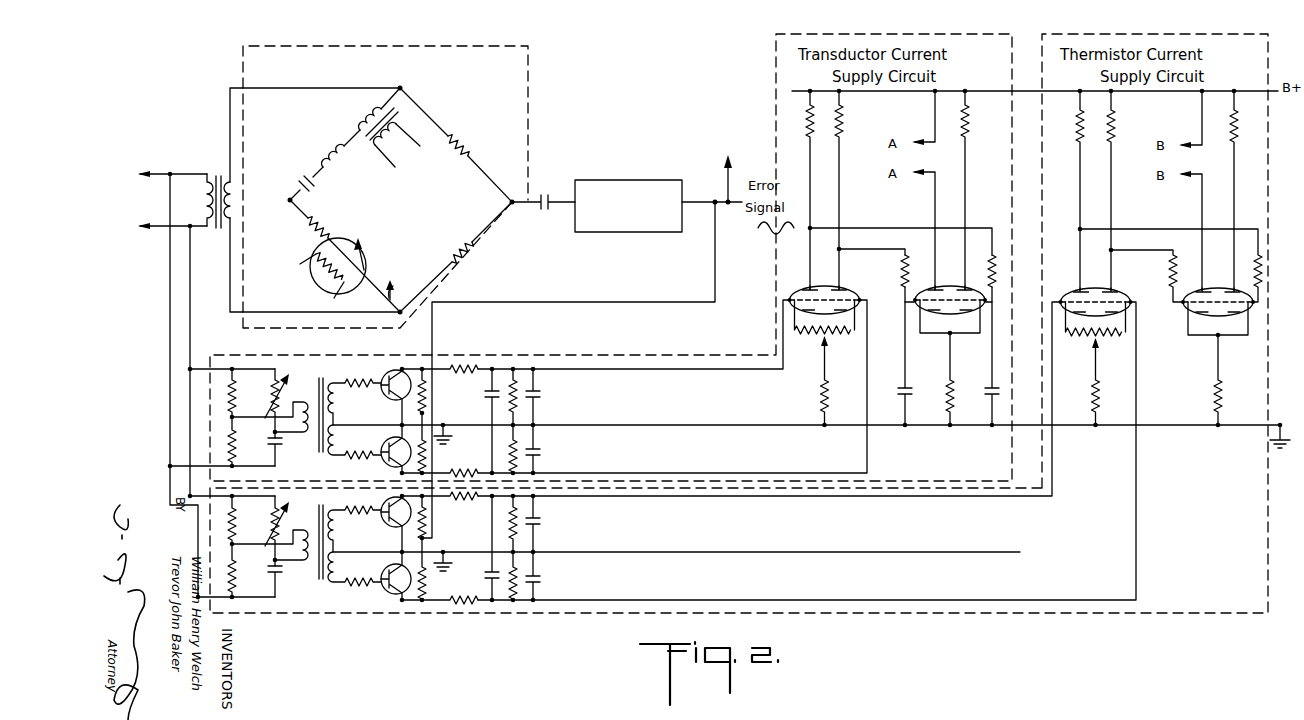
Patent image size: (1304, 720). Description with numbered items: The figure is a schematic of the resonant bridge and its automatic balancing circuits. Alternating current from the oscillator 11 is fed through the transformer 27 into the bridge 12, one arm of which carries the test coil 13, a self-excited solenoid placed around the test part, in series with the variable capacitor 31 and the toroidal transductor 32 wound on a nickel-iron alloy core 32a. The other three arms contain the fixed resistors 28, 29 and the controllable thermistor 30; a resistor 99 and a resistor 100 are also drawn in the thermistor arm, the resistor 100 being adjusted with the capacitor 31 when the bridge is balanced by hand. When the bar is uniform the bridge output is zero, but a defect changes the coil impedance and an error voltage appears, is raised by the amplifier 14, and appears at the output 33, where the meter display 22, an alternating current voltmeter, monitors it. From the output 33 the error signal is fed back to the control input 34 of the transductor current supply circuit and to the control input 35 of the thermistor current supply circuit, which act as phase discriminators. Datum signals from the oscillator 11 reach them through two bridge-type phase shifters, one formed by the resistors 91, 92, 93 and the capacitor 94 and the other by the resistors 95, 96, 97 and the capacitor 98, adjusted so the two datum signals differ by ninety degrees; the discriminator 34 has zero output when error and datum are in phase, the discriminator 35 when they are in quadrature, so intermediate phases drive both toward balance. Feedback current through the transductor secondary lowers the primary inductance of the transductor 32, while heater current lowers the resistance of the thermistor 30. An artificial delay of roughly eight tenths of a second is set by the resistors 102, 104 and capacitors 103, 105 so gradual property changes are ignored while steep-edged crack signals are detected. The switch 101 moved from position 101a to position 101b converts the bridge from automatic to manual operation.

The oscillator 11 is at (147, 178).
The bridge 12 is at (385, 187).
The test coil 13 is at (322, 144).
The amplifier 14 is at (628, 206).
The meter display 22 is at (706, 160).
The transformer 27 is at (226, 232).
The fixed resistor 28 is at (470, 150).
The fixed resistor 29 is at (462, 252).
The thermistor 30 is at (310, 276).
The variable capacitor 31 is at (300, 178).
The toroidal transductor 32 is at (370, 136).
The core 32a is at (406, 114).
The output 33 is at (715, 192).
The control input 34 is at (424, 412).
The control input 35 is at (440, 548).
The resistor 91 is at (252, 388).
The resistor 92 is at (252, 442).
The resistor 93 is at (282, 388).
The capacitor 94 is at (282, 444).
The resistor 95 is at (252, 516).
The resistor 96 is at (252, 570).
The resistor 97 is at (282, 516).
The capacitor 98 is at (282, 572).
The resistor 99 is at (326, 220).
The resistor 100 is at (360, 242).
The switch 101 is at (390, 310).
The switch position 101a is at (372, 298).
The switch position 101b is at (390, 282).
The resistor 102 is at (901, 276).
The capacitor 103 is at (896, 388).
The resistor 104 is at (996, 254).
The capacitor 105 is at (980, 388).